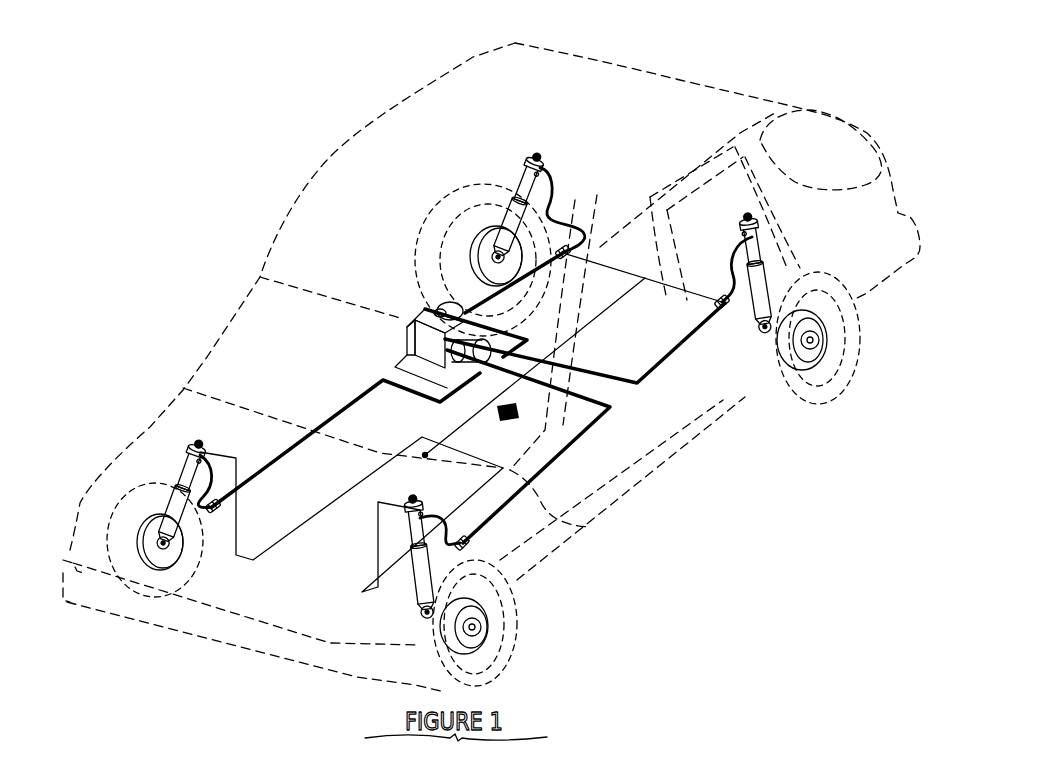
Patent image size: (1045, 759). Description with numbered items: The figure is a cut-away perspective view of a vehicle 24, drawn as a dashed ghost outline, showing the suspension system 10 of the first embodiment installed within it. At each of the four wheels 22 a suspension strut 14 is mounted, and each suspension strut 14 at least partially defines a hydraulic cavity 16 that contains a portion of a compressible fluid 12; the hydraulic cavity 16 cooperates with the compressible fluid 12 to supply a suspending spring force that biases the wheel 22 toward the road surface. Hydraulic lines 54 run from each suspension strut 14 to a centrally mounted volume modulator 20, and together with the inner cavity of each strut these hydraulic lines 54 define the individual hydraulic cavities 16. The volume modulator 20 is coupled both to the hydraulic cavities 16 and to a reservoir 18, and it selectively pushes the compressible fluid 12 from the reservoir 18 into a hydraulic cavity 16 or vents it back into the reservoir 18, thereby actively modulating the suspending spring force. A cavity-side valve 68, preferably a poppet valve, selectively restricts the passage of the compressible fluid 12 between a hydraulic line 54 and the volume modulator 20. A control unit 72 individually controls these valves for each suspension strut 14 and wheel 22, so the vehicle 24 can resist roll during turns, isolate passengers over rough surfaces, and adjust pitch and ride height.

The suspension system 10 is at (198, 278).
The compressible fluid 12 is at (448, 262).
The suspension strut 14 is at (527, 178).
The hydraulic cavity 16 is at (383, 530).
The reservoir 18 is at (408, 328).
The volume modulator 20 is at (452, 302).
The wheel 22 is at (446, 211).
The vehicle 24 is at (296, 650).
The hydraulic line 54 is at (560, 220).
The cavity-side valve 68 is at (452, 370).
The control unit 72 is at (436, 310).